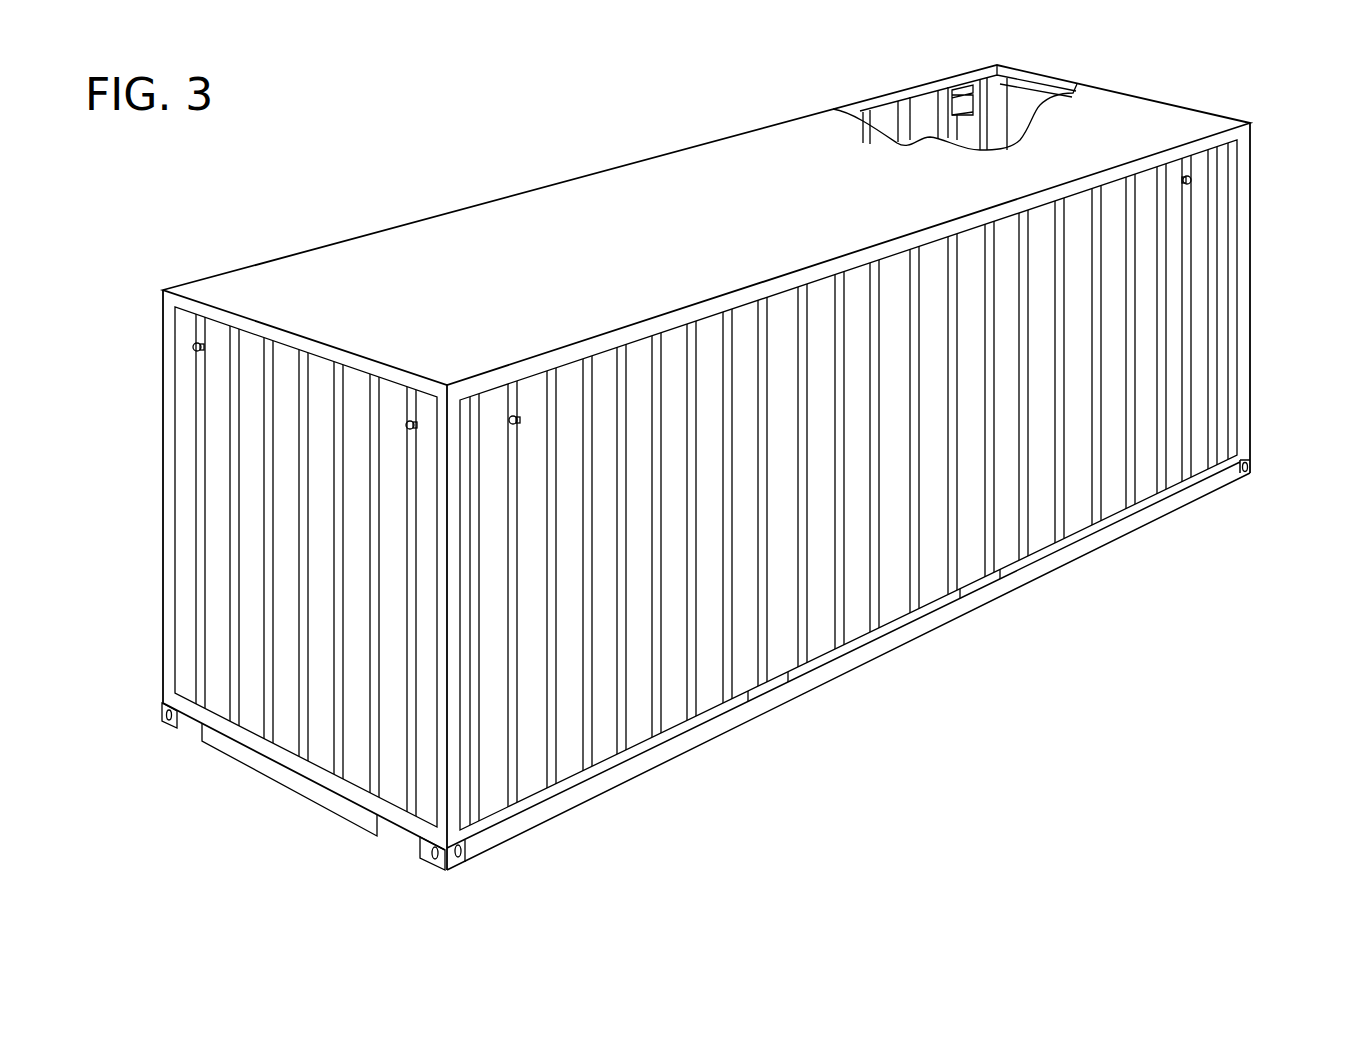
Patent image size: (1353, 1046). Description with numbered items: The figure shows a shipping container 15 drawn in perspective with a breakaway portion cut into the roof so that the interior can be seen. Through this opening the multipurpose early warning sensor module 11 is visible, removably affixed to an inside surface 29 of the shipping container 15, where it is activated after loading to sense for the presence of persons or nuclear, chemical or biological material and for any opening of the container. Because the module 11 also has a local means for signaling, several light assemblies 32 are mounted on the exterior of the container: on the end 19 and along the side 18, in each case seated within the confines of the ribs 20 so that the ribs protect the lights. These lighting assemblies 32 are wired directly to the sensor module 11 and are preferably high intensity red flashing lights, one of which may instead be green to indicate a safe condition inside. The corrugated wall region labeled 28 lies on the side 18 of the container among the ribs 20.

The shipping container 15 is at (194, 859).
The multipurpose early warning sensor module 11 is at (963, 98).
The inside surface 29 is at (963, 130).
The light assembly 32 is at (193, 350).
The ribs 20 is at (1160, 267).
The side 18 is at (1175, 293).
The end 19 is at (257, 600).
The side panel 28 is at (932, 478).